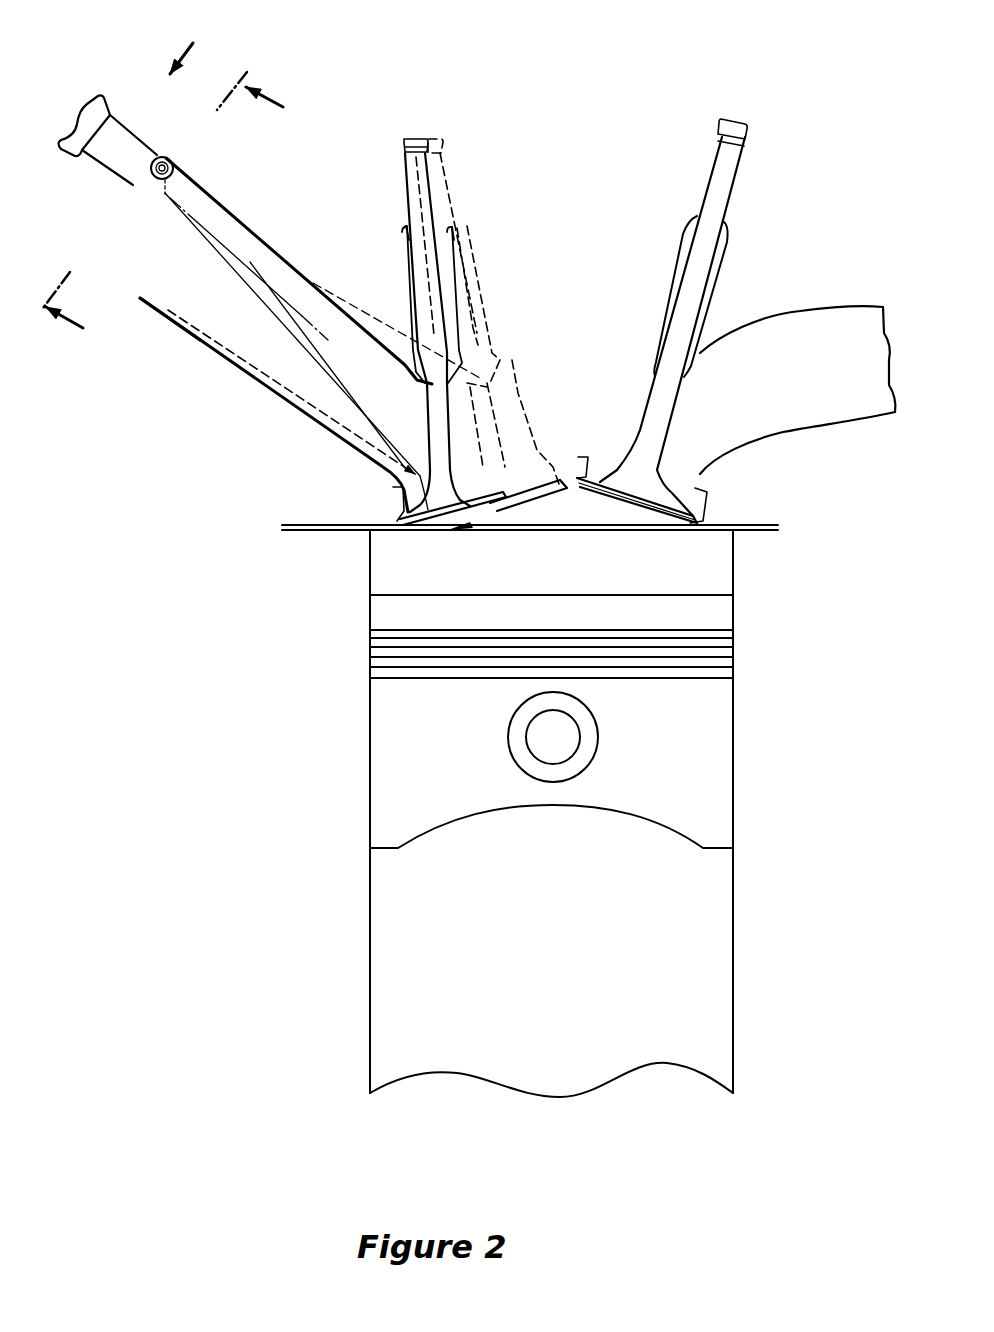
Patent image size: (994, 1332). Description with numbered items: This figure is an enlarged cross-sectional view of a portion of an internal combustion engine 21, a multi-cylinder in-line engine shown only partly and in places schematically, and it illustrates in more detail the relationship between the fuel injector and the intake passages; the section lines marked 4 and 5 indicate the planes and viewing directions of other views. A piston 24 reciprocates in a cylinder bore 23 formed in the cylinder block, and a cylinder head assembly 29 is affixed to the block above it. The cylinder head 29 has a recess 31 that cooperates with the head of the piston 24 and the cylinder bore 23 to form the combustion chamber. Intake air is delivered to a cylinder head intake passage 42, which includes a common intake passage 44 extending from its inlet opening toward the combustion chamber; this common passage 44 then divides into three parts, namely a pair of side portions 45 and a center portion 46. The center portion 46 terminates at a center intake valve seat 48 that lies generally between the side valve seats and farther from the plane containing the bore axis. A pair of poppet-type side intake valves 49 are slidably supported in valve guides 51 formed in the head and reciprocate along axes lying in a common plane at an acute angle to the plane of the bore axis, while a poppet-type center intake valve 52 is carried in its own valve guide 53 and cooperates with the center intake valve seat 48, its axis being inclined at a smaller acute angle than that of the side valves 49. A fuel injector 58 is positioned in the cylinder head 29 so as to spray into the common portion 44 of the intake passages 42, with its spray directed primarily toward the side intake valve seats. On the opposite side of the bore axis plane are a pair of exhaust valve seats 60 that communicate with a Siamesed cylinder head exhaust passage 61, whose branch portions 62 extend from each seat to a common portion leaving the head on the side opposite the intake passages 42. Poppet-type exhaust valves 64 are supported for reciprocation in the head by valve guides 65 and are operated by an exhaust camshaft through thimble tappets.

The section line 4- 4 is at (167, 218).
The view direction 5 is at (195, 41).
The internal combustion engine 21 is at (188, 677).
The cylinder bore 23 is at (368, 571).
The piston 24 is at (603, 800).
The cylinder head assembly 29 is at (750, 517).
The recess 31 is at (580, 510).
The cylinder head intake passage 42 is at (255, 379).
The common intake passage 44 is at (168, 310).
The side portion 45 is at (397, 327).
The center portion 46 is at (336, 418).
The center intake valve seat 48 is at (413, 500).
The side intake valve 49 is at (457, 277).
The valve guide 51 is at (487, 305).
The center intake valve 52 is at (425, 300).
The valve guide 53 is at (407, 237).
The fuel injector 58 is at (120, 192).
The exhaust valve seat 60 is at (678, 477).
The cylinder head exhaust passage 61 is at (829, 402).
The branch portion 62 is at (802, 328).
The exhaust valve 64 is at (693, 273).
The valve guide 65 is at (720, 253).